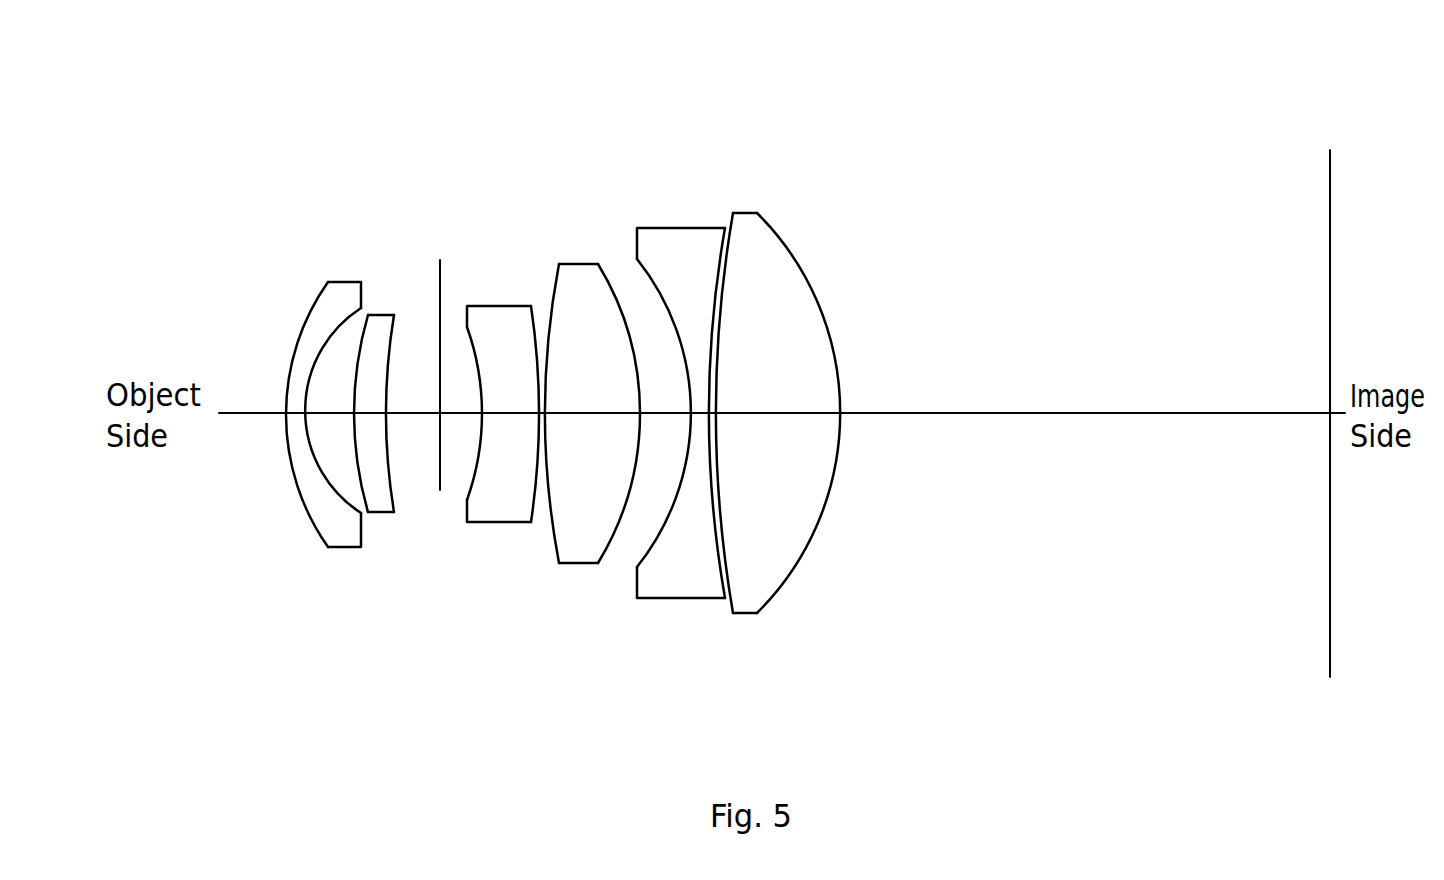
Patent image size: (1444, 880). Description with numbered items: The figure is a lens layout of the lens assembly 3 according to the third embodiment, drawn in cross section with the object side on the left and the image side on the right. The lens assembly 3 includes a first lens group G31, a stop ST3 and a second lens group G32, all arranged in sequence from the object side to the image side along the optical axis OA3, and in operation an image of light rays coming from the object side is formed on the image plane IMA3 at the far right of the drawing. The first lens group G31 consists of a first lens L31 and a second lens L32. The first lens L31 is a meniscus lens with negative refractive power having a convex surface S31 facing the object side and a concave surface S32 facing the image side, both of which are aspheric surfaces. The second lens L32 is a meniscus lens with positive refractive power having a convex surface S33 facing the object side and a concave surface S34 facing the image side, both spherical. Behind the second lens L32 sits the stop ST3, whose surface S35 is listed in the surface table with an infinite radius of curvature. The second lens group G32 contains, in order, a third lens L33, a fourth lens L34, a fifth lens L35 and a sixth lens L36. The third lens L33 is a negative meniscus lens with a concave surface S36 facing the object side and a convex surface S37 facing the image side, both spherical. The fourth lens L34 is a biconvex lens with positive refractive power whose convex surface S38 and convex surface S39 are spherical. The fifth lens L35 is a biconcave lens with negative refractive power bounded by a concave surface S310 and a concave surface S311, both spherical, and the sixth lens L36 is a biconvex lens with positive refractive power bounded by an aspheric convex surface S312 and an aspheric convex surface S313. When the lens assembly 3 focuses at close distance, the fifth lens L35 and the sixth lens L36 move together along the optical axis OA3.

The lens assembly 3 is at (184, 49).
The first lens group G31 is at (422, 132).
The second lens group G32 is at (772, 132).
The first lens L31 is at (346, 282).
The second lens L32 is at (384, 315).
The third lens L33 is at (503, 306).
The fourth lens L34 is at (577, 264).
The fifth lens L35 is at (677, 228).
The sixth lens L36 is at (747, 213).
The stop ST3 is at (440, 260).
The optical axis OA3 is at (261, 413).
The image plane IMA3 is at (1330, 150).
The convex surface S31 is at (305, 508).
The concave surface S32 is at (348, 508).
The convex surface S33 is at (362, 480).
The concave surface S34 is at (388, 470).
The stop surface S35 is at (440, 490).
The concave surface S36 is at (478, 470).
The convex surface S37 is at (537, 443).
The convex surface S38 is at (552, 525).
The convex surface S39 is at (630, 492).
The concave surface S310 is at (667, 537).
The concave surface S311 is at (713, 520).
The convex surface S312 is at (727, 533).
The convex surface S313 is at (810, 520).